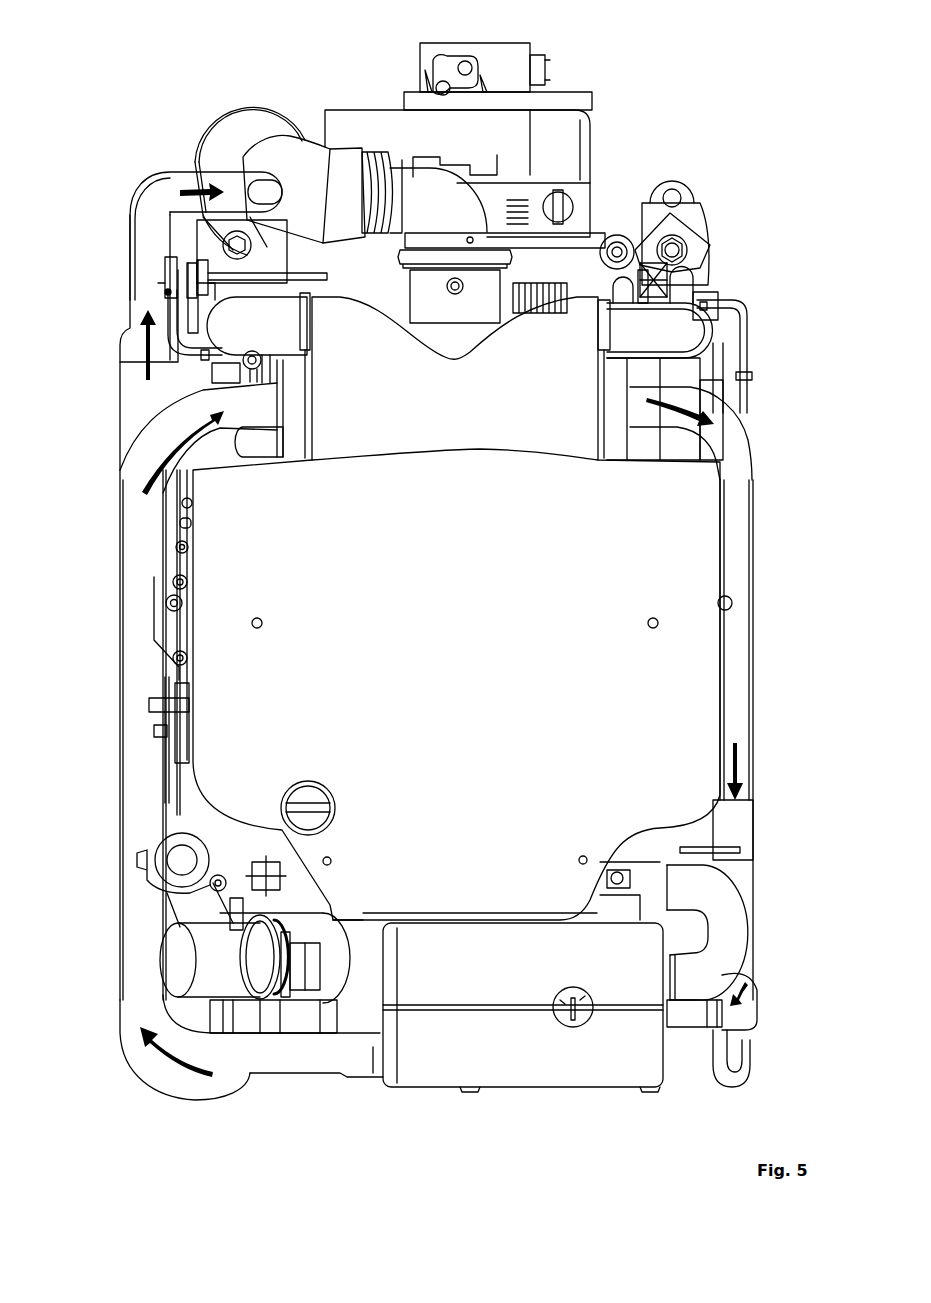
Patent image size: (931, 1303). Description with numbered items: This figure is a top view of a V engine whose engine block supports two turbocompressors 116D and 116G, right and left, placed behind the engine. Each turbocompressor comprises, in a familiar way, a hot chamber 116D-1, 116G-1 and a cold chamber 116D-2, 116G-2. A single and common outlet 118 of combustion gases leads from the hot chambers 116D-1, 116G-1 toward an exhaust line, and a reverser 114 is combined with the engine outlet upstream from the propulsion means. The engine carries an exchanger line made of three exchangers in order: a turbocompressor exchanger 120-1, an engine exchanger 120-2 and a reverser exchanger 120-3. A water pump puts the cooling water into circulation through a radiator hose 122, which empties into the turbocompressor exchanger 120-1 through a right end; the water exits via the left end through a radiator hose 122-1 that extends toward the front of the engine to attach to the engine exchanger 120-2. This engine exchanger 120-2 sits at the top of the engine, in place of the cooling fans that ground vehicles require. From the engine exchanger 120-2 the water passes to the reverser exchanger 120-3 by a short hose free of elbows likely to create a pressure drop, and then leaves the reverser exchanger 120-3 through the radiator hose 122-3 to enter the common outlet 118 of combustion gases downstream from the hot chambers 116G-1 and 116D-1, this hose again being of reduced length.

The reverser 114 is at (503, 133).
The outlet of combustion gases 118 is at (397, 177).
The hot chamber 116G-1 is at (637, 262).
The cold chamber 116G-2 is at (703, 293).
The turbocompressor 116G is at (758, 373).
The turbocompressor 116D is at (227, 378).
The hot chamber 116D-1 is at (205, 295).
The cold chamber 116D-2 is at (212, 290).
The turbocompressor exchanger 120-1 is at (570, 403).
The engine exchanger 120-2 is at (475, 1090).
The reverser exchanger 120-3 is at (118, 482).
The radiator hose 122 is at (162, 1068).
The radiator hose 122-1 is at (753, 643).
The radiator hose 122-3 is at (133, 347).